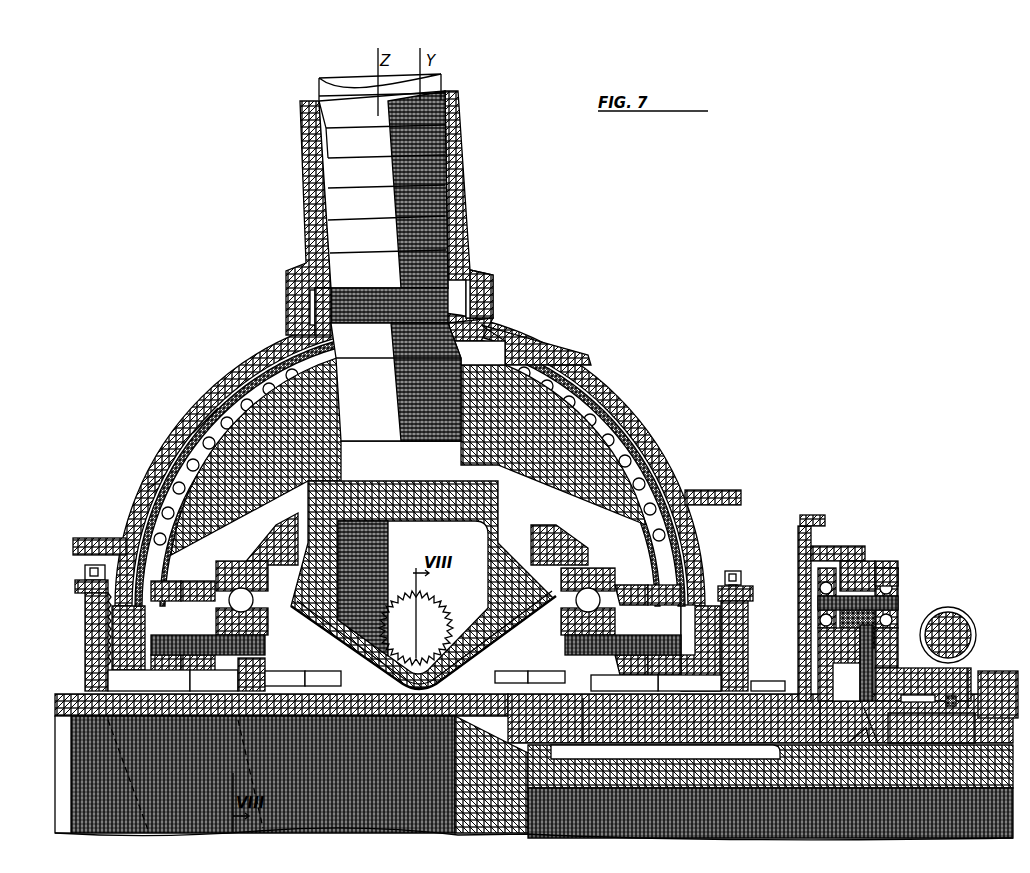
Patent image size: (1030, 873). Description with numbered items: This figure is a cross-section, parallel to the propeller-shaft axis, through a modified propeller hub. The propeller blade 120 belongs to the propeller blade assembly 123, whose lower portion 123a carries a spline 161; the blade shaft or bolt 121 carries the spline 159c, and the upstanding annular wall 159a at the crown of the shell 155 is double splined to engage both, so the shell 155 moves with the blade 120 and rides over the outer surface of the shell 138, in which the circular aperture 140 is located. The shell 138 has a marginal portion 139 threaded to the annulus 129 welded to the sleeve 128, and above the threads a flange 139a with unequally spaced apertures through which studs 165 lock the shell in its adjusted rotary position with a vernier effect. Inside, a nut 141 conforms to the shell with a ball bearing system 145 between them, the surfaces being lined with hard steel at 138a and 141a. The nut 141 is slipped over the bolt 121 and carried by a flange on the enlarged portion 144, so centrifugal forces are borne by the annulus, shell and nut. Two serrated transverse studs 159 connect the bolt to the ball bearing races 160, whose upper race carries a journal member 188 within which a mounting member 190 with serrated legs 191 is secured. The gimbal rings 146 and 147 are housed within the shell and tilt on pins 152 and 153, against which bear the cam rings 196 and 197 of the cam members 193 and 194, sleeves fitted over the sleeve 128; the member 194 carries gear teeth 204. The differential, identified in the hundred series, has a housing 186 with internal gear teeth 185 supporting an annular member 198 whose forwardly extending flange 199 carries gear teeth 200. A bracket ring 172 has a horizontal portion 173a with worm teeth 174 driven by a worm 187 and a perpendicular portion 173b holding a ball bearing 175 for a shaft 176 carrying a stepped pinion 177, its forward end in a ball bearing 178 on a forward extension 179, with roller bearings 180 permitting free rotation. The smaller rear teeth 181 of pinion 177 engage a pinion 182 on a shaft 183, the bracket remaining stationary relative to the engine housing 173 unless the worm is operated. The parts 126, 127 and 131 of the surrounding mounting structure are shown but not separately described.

The propeller blade 120 is at (343, 80).
The blade shaft 121 is at (440, 190).
The propeller blade assembly 123 is at (455, 142).
The portion of the propeller assembly 123a is at (487, 282).
The upstanding annular wall 159a is at (305, 285).
The spline 159c is at (425, 298).
The spline 161 is at (300, 292).
The circular aperture 140 is at (490, 335).
The shell 138 is at (690, 558).
The hard steel lining 138a is at (210, 410).
The shell 155 is at (148, 470).
The nut 141 is at (640, 520).
The hard steel lining 141a is at (168, 483).
The ball bearing system 145 is at (608, 432).
The enlarged portion 144 is at (483, 480).
The journal member 188 is at (545, 548).
The mounting member 190 is at (492, 530).
The serrated transverse studs 159 is at (430, 622).
The legs 191 is at (470, 630).
The gear teeth 204 is at (502, 671).
The ball bearing assembly 160 is at (262, 628).
The pin 153 is at (620, 620).
The gimbal ring 146 is at (150, 662).
The gimbal ring 147 is at (216, 655).
The studs 165 is at (80, 560).
The flange 139a is at (72, 578).
The annulus 129 is at (77, 628).
The marginal portion 139 is at (108, 630).
The pin 152 is at (184, 697).
The cam ring 196 is at (244, 700).
The sleeve 128 is at (283, 700).
The cam member 193 is at (358, 700).
The cam member 194 is at (491, 774).
The cam ring 197 is at (578, 700).
The lower base 127 is at (612, 740).
The forwardly extending flange 199 is at (752, 750).
The forward extension 179 is at (815, 692).
The base member 126 is at (858, 720).
The pinion 182 is at (853, 700).
The roller bearings 180 is at (917, 710).
The foundation 131 is at (950, 730).
The annular member 198 is at (792, 580).
The gear teeth 200 is at (762, 675).
The differential housing 186 is at (800, 518).
The ball bearing 178 is at (836, 560).
The pinion 177 is at (858, 565).
The rear set of teeth 181 is at (868, 575).
The perpendicular portion 173b is at (880, 563).
The ball bearing 175 is at (888, 566).
The shaft 176 is at (887, 637).
The bracket ring 172 is at (940, 600).
The worm 187 is at (952, 612).
The worm teeth 174 is at (958, 642).
The internal gear teeth 185 is at (855, 618).
The shaft 183 is at (850, 650).
The horizontal portion 173a is at (965, 660).
The engine housing 173 is at (1004, 676).